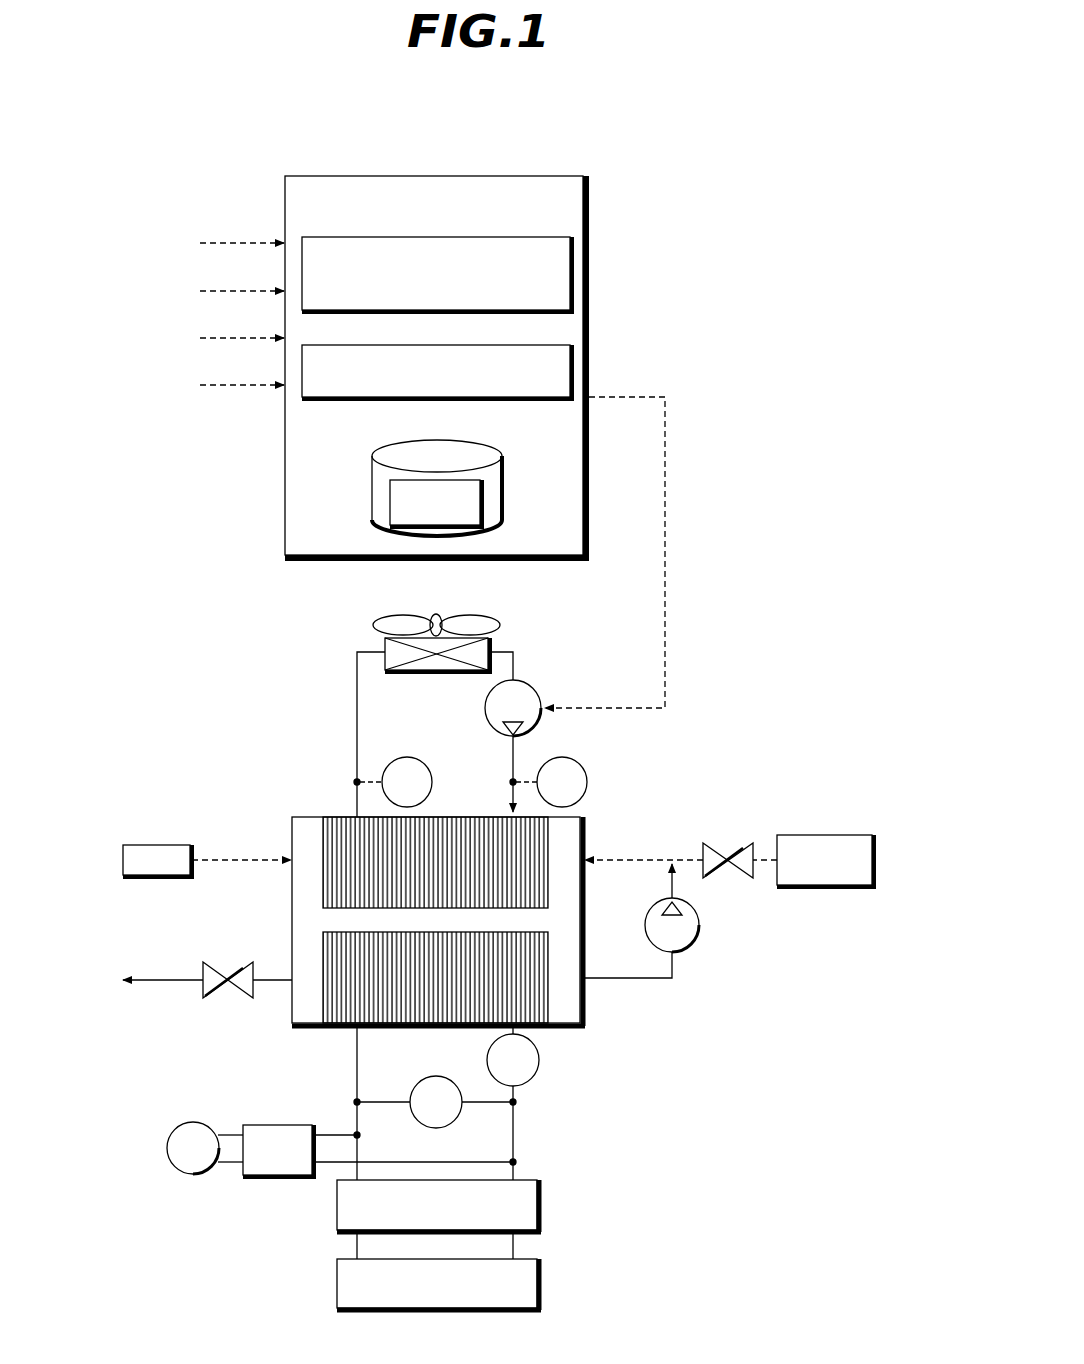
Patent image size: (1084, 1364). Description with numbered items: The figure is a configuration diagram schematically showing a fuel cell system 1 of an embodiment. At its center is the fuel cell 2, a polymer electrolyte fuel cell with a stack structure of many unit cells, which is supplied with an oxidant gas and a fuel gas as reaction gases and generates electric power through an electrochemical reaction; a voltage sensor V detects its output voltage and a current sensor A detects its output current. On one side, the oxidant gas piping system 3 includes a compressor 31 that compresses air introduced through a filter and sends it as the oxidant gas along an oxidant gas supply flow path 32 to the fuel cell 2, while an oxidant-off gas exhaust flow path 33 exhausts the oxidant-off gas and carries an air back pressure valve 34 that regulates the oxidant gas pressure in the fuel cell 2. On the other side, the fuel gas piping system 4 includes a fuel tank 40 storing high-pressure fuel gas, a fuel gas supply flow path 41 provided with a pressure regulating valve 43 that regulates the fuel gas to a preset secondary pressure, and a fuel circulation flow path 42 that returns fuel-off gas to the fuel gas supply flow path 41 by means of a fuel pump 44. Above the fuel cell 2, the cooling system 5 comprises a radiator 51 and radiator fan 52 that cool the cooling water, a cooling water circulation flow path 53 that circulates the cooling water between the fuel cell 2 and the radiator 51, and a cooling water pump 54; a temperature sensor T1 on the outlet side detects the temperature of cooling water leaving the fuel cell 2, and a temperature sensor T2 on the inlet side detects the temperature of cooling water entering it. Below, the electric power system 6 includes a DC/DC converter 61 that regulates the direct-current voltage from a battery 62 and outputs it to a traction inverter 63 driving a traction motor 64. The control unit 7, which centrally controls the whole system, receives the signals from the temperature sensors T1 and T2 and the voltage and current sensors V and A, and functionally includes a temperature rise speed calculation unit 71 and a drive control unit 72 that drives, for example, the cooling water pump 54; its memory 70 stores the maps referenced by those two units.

The fuel cell system 1 is at (728, 156).
The fuel cell 2 is at (305, 817).
The oxidant gas piping system 3 is at (176, 826).
The fuel gas piping system 4 is at (788, 818).
The cooling system 5 is at (316, 653).
The electric power system 6 is at (633, 1169).
The control unit 7 is at (433, 176).
The compressor 31 is at (148, 878).
The oxidant gas supply flow path 32 is at (230, 866).
The oxidant-off gas exhaust flow path 33 is at (160, 984).
The air back pressure valve 34 is at (220, 998).
The fuel tank 40 is at (813, 888).
The fuel gas supply flow path 41 is at (632, 866).
The fuel circulation flow path 42 is at (630, 980).
The pressure regulating valve 43 is at (718, 879).
The fuel pump 44 is at (699, 930).
The radiator 51 is at (489, 652).
The radiator fan 52 is at (486, 620).
The cooling water circulation flow path 53 is at (357, 686).
The cooling water pump 54 is at (535, 692).
The DC/DC converter 61 is at (541, 1200).
The battery 62 is at (541, 1280).
The traction inverter 63 is at (278, 1178).
The traction motor 64 is at (195, 1176).
The memory 70 is at (503, 476).
The temperature rise speed calculation unit 71 is at (575, 270).
The drive control unit 72 is at (575, 360).
The temperature sensor T1 is at (407, 757).
The temperature sensor T2 is at (588, 781).
The voltage sensor V is at (435, 1102).
The current sensor A is at (513, 1060).